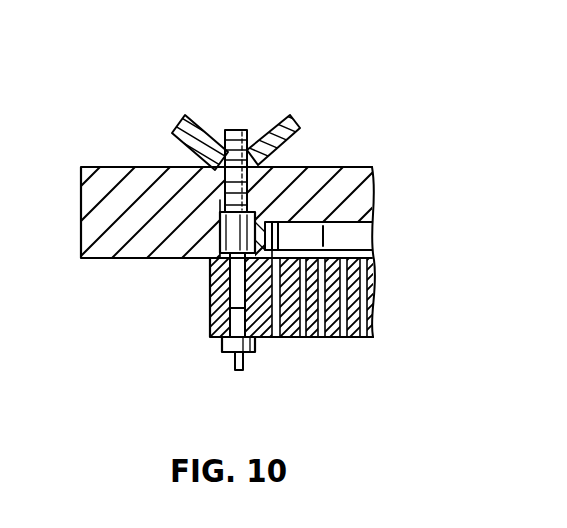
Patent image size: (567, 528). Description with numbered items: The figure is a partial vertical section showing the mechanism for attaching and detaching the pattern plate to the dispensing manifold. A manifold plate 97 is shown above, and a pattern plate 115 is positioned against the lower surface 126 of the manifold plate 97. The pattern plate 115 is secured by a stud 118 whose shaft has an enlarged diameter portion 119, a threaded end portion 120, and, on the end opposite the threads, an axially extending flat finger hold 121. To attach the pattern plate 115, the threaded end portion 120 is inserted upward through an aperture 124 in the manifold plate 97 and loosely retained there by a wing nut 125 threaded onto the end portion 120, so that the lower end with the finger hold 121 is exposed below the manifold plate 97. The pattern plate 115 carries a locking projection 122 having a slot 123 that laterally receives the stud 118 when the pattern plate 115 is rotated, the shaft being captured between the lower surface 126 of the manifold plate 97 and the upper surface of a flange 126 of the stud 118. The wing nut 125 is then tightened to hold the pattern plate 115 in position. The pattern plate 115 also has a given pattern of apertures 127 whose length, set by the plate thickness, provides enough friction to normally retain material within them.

The manifold plate 97 is at (90, 200).
The pattern plate 115 is at (373, 250).
The stud 118 is at (252, 218).
The enlarged diameter portion 119 is at (305, 190).
The threaded end portion 120 is at (233, 128).
The flat finger hold 121 is at (232, 368).
The locking projection 122 is at (213, 295).
The slot 123 is at (217, 310).
The aperture 124 is at (218, 200).
The wing nut 125 is at (182, 130).
The lower surface 126 is at (120, 262).
The aperture 127 is at (358, 320).